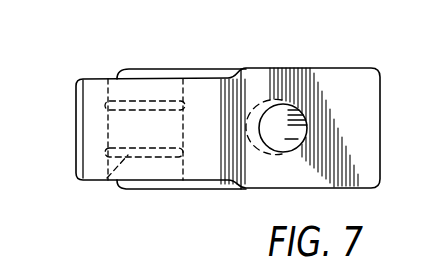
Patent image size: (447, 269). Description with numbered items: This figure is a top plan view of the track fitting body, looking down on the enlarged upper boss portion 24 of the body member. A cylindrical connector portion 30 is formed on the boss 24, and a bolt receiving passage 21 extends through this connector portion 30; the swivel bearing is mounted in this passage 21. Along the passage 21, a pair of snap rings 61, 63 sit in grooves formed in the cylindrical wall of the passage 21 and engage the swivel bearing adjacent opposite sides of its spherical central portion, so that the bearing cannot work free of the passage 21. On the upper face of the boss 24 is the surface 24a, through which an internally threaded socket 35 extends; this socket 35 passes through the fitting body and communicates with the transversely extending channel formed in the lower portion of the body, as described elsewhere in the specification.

The bolt receiving passage 21 is at (180, 163).
The upper boss portion 24 is at (282, 189).
The surface of the upper boss portion 24a is at (352, 78).
The cylindrical connector portion 30 is at (77, 96).
The internally threaded socket 35 is at (272, 118).
The snap ring 61 is at (97, 183).
The snap ring 63 is at (131, 106).